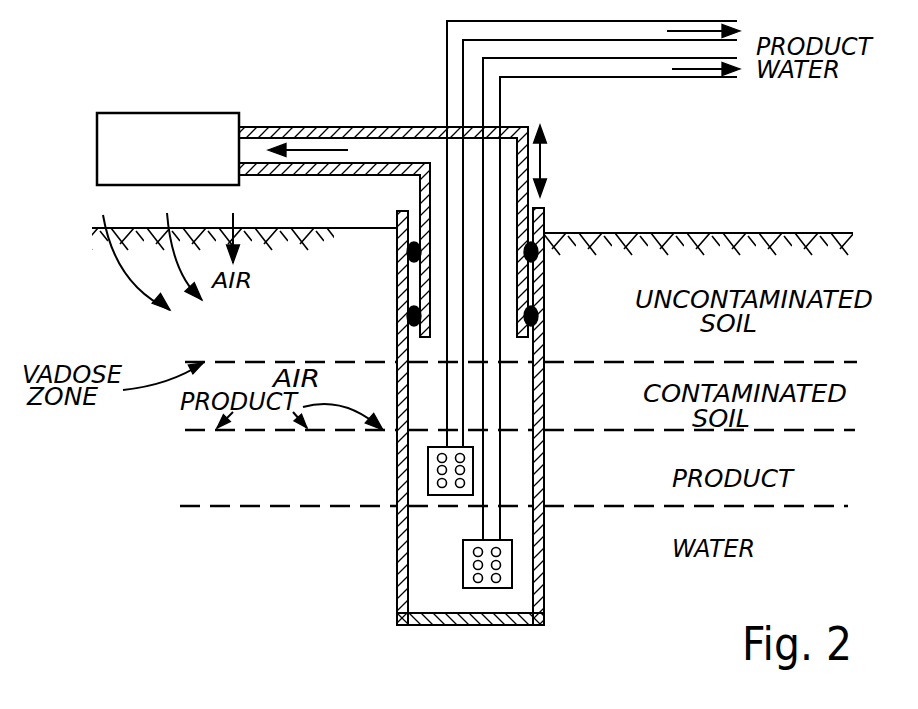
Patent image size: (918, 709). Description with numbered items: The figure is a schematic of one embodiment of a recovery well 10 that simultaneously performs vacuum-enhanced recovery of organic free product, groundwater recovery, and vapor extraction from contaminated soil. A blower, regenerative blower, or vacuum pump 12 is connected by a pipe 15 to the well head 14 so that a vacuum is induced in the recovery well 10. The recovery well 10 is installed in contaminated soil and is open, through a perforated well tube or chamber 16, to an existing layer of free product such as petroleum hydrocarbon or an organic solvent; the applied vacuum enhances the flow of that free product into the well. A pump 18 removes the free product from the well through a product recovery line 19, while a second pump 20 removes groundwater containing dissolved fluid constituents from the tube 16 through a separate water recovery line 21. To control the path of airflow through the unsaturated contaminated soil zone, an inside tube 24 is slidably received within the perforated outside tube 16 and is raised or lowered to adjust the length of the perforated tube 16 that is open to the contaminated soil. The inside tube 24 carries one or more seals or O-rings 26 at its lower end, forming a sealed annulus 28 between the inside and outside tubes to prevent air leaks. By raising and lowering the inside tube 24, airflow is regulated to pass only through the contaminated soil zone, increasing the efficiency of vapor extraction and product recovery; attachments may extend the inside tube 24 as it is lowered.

The recovery well 10 is at (556, 540).
The vacuum pump 12 is at (143, 112).
The well head 14 is at (397, 216).
The pipe 15 is at (310, 126).
The perforated well tube 16 is at (546, 467).
The pump 18 is at (428, 478).
The product recovery line 19 is at (446, 443).
The pump 20 is at (463, 570).
The water recovery line 21 is at (482, 532).
The inside tube 24 is at (545, 201).
The seals 26 is at (407, 257).
The sealed annulus 28 is at (546, 302).